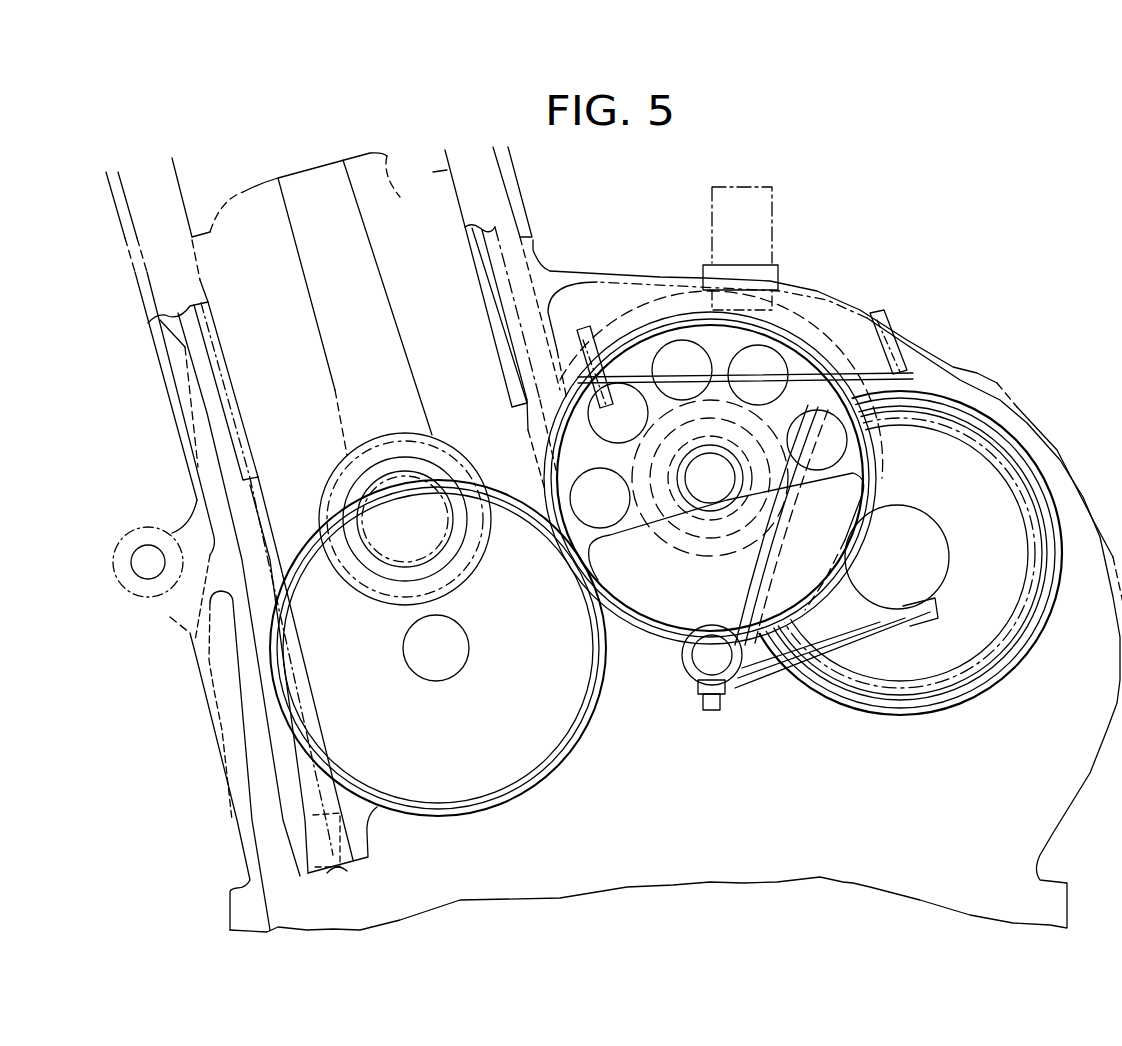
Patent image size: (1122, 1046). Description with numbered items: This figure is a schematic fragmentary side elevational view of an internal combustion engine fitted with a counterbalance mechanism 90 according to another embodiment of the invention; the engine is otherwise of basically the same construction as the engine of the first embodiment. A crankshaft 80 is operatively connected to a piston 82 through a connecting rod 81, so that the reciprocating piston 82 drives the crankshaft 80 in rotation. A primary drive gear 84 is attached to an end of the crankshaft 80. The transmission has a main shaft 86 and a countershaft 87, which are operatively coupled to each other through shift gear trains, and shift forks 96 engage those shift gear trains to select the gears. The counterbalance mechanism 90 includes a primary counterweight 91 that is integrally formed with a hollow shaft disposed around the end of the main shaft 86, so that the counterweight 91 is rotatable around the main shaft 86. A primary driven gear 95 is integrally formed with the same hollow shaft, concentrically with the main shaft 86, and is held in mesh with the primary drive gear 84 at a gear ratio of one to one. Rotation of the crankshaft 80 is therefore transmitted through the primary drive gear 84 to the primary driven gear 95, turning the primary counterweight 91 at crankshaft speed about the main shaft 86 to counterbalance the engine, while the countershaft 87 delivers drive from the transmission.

The crankshaft 80 is at (470, 648).
The connecting rod 81 is at (393, 340).
The piston 82 is at (614, 539).
The primary drive gear 84 is at (512, 808).
The main shaft 86 is at (705, 465).
The countershaft 87 is at (948, 548).
The counterbalance mechanism 90 is at (667, 652).
The primary counterweight 91 is at (870, 465).
The primary driven gear 95 is at (805, 335).
The shift forks 96 is at (680, 573).